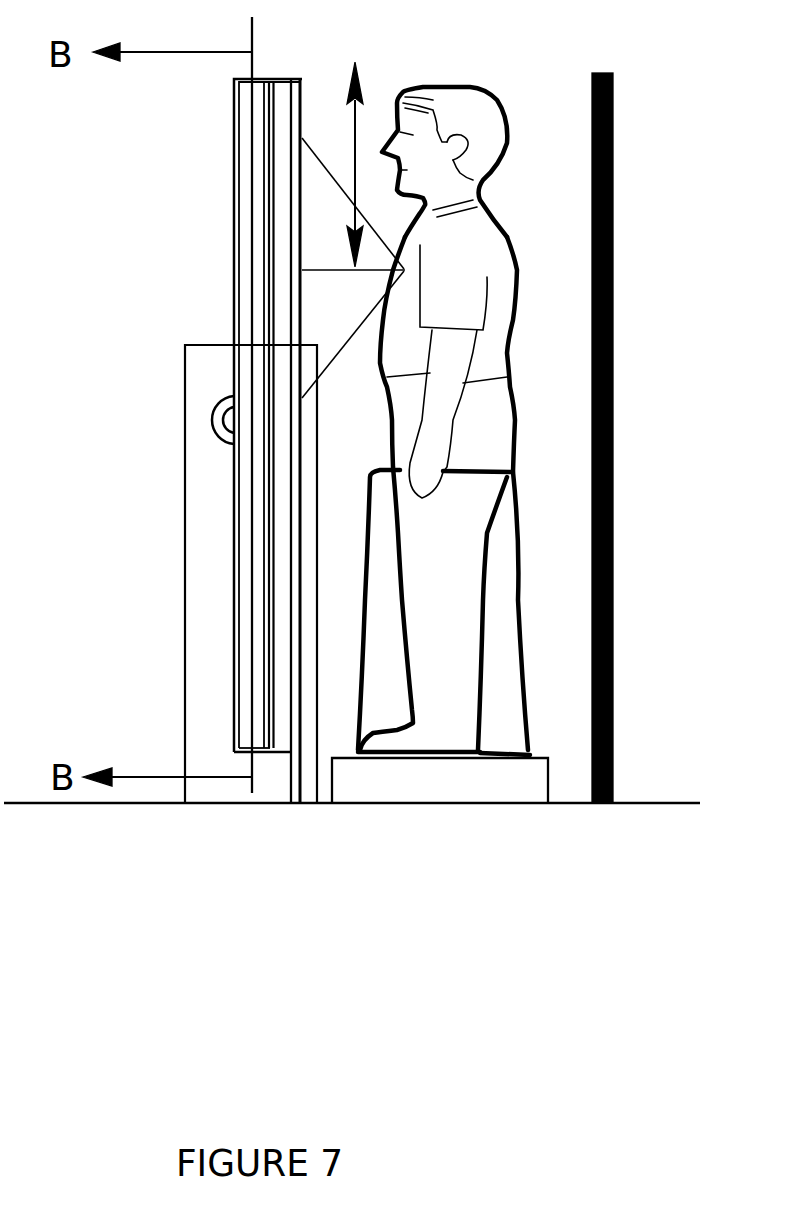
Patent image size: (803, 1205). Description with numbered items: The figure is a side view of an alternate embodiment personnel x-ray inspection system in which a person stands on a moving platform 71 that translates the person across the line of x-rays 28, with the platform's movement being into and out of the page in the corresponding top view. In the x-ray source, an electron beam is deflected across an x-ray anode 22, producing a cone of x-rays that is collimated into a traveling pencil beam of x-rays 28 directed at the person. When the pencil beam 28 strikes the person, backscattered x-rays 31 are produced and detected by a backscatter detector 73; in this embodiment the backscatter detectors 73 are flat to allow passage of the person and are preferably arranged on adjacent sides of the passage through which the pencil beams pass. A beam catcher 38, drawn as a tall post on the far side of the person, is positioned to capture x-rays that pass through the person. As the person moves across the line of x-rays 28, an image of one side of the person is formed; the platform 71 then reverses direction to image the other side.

The x-ray anode 22 is at (243, 198).
The traveling pencil beam of x-rays 28 is at (302, 270).
The backscattered x-rays 31 is at (313, 299).
The backscatter detector 73 is at (293, 465).
The platform 71 is at (521, 784).
The beam catcher 38 is at (603, 73).